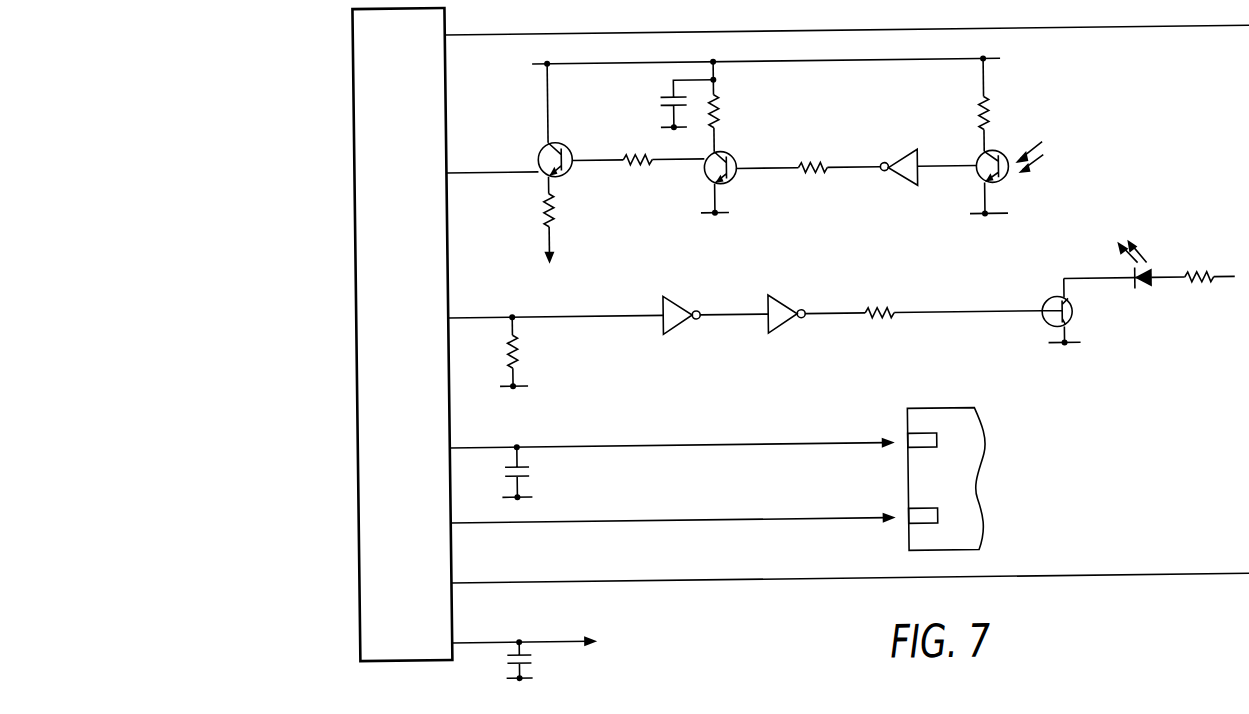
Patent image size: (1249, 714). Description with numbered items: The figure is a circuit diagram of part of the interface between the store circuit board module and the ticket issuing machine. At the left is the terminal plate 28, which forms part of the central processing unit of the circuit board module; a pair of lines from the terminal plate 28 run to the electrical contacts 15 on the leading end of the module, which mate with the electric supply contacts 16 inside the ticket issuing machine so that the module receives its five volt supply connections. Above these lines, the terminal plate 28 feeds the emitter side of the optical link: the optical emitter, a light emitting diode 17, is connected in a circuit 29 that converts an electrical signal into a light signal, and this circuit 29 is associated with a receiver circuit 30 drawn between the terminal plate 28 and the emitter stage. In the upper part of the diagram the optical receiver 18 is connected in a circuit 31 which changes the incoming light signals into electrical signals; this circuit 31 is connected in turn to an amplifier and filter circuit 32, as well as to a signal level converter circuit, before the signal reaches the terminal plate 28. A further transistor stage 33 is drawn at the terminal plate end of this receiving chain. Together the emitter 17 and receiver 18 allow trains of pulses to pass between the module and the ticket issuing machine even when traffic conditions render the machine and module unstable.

The terminal plate 28 is at (372, 471).
The transistor 33 is at (571, 172).
The amplifier and filter circuit 32 is at (736, 184).
The receiver circuit 31 is at (903, 191).
The optical receiver 18 is at (1009, 181).
The receiver circuit 30 is at (520, 350).
The emitter circuit 29 is at (1046, 330).
The optical emitter (light emitting diode) 17 is at (1143, 295).
The electrical contacts 15 is at (891, 518).
The electric supply contacts 16 is at (923, 524).